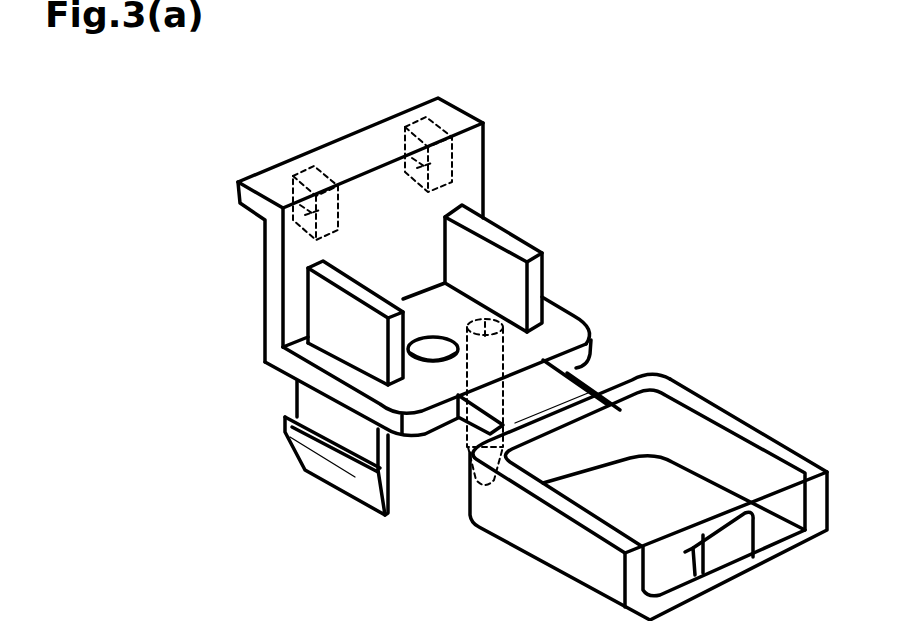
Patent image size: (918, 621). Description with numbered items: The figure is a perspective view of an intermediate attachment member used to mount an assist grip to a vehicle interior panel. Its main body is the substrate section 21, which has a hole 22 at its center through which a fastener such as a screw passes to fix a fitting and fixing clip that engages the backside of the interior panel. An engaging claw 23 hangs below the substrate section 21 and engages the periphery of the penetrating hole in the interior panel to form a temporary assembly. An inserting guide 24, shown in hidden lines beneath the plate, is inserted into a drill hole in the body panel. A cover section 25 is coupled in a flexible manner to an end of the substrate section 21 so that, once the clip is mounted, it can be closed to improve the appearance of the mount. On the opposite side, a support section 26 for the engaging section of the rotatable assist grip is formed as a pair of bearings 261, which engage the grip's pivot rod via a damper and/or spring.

The substrate section 21 is at (563, 323).
The hole 22 is at (432, 362).
The engaging claw 23 is at (323, 470).
The inserting guide 24 is at (487, 318).
The cover section 25 is at (677, 483).
The support section 26 is at (365, 157).
The bearings 261 is at (315, 173).